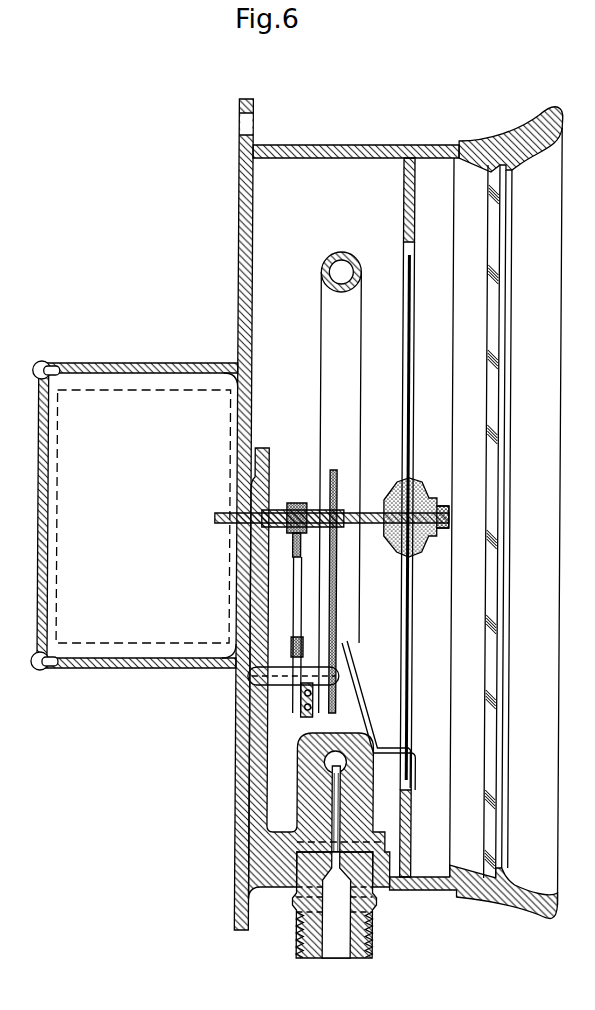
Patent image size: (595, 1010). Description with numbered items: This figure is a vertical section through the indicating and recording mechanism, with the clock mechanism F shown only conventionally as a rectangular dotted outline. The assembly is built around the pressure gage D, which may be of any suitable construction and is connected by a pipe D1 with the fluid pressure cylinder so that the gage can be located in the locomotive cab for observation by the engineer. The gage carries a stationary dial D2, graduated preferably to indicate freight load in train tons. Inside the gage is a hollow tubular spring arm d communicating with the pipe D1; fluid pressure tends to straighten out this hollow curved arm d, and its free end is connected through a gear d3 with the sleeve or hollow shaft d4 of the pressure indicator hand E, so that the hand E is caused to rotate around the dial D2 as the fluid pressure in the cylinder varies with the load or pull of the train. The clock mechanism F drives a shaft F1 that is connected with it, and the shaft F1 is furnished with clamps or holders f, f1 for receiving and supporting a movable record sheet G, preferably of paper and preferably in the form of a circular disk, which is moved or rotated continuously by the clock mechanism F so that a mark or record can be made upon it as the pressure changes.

The pressure gage D is at (345, 147).
The pipe D1 is at (377, 926).
The stationary dial D2 is at (417, 205).
The clock mechanism F is at (134, 515).
The shaft F1 is at (223, 522).
The movable record sheet G is at (413, 395).
The pressure indicator hand E is at (366, 690).
The hollow tubular spring arm d is at (305, 482).
The gear d3 is at (303, 503).
The sleeve or hollow shaft d4 is at (282, 510).
The clamp or holder f is at (398, 495).
The clamp or holder f1 is at (426, 495).